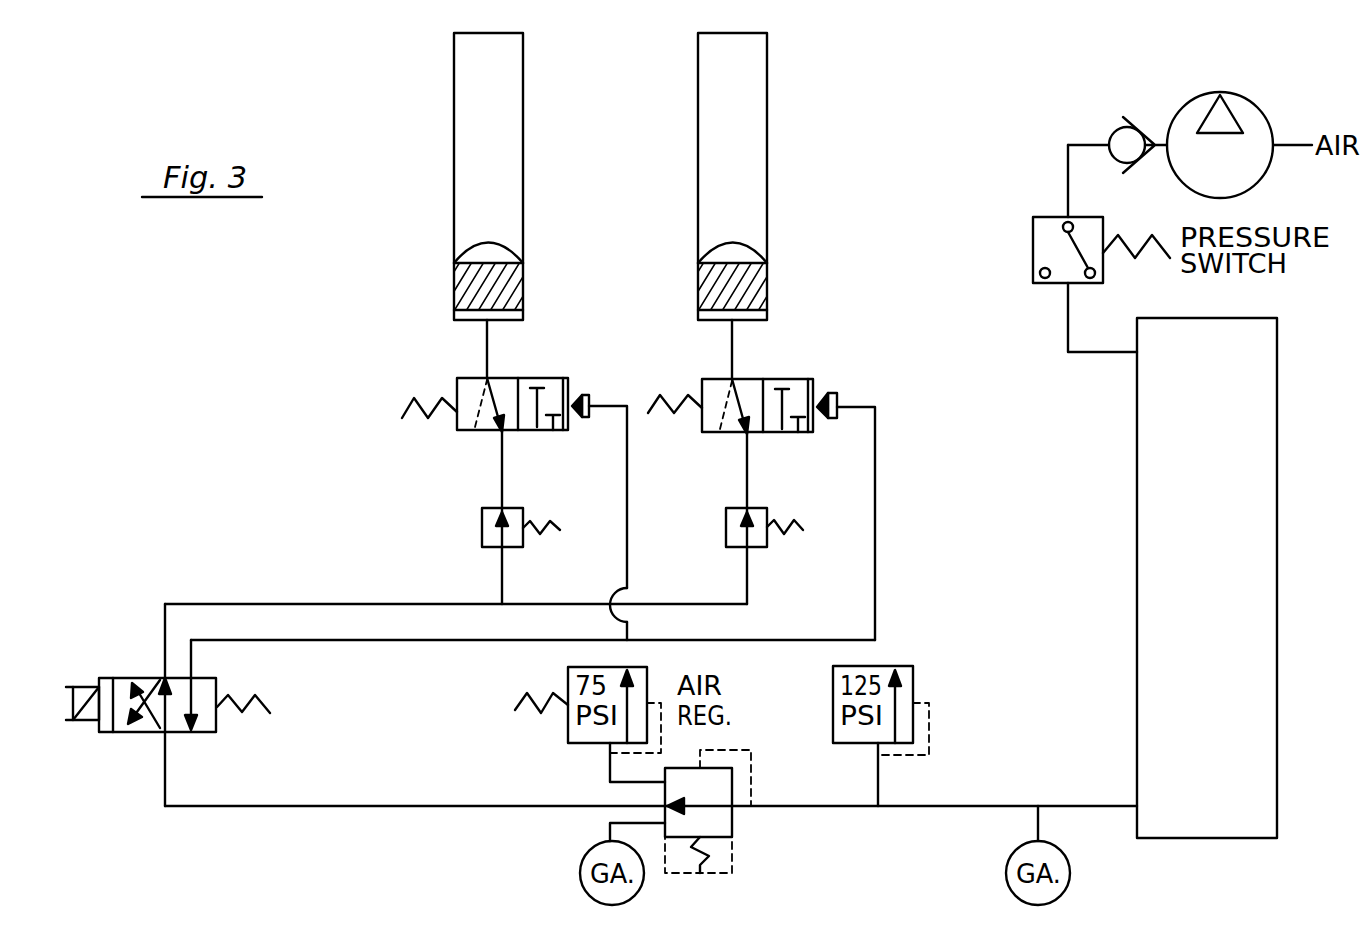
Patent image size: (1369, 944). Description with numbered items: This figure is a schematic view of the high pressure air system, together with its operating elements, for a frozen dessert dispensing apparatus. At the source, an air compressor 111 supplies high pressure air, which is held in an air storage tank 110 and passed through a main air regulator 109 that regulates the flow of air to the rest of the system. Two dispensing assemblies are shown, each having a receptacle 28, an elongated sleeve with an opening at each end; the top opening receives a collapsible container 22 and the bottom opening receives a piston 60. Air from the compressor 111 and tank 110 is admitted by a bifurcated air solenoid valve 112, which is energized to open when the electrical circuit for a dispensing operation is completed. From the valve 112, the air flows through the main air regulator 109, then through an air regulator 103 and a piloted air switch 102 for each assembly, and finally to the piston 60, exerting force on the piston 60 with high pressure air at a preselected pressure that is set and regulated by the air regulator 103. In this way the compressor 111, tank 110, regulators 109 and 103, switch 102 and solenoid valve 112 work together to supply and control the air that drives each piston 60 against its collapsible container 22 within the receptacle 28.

The collapsible container 22 is at (508, 157).
The receptacle 28 is at (767, 130).
The piston 60 is at (507, 289).
The piloted air switch 102 is at (470, 378).
The air regulator 103 is at (482, 528).
The main air regulator 109 is at (732, 822).
The air storage tank 110 is at (1228, 545).
The air compressor 111 is at (1186, 101).
The bifurcated air solenoid valve 112 is at (130, 678).